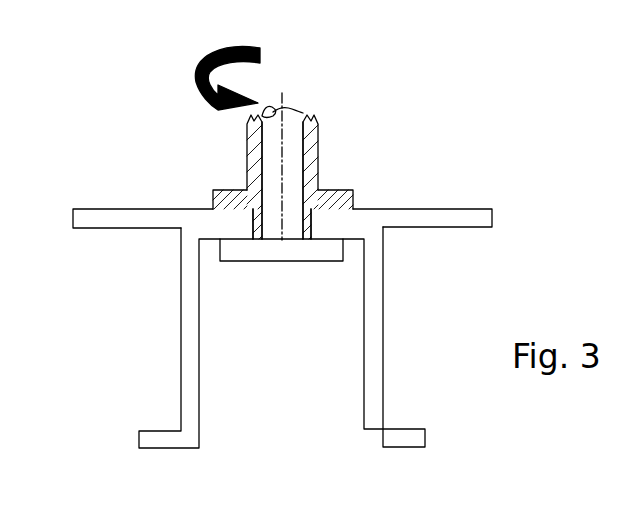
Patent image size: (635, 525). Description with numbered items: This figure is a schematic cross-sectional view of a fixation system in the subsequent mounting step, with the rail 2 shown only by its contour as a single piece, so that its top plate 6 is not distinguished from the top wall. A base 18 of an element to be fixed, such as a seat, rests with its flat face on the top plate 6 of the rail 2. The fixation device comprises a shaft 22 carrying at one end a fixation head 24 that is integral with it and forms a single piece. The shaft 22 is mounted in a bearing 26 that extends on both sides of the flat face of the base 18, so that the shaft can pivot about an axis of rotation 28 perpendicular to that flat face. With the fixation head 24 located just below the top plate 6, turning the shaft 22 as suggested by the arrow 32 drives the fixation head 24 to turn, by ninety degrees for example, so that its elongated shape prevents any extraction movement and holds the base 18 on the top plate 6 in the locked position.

The rail 2 is at (384, 315).
The top plate 6 is at (488, 212).
The base 18 is at (355, 200).
The shaft 22 is at (303, 113).
The fixation head 24 is at (278, 255).
The bearing 26 is at (318, 149).
The axis of rotation 28 is at (284, 92).
The arrow 32 is at (238, 48).